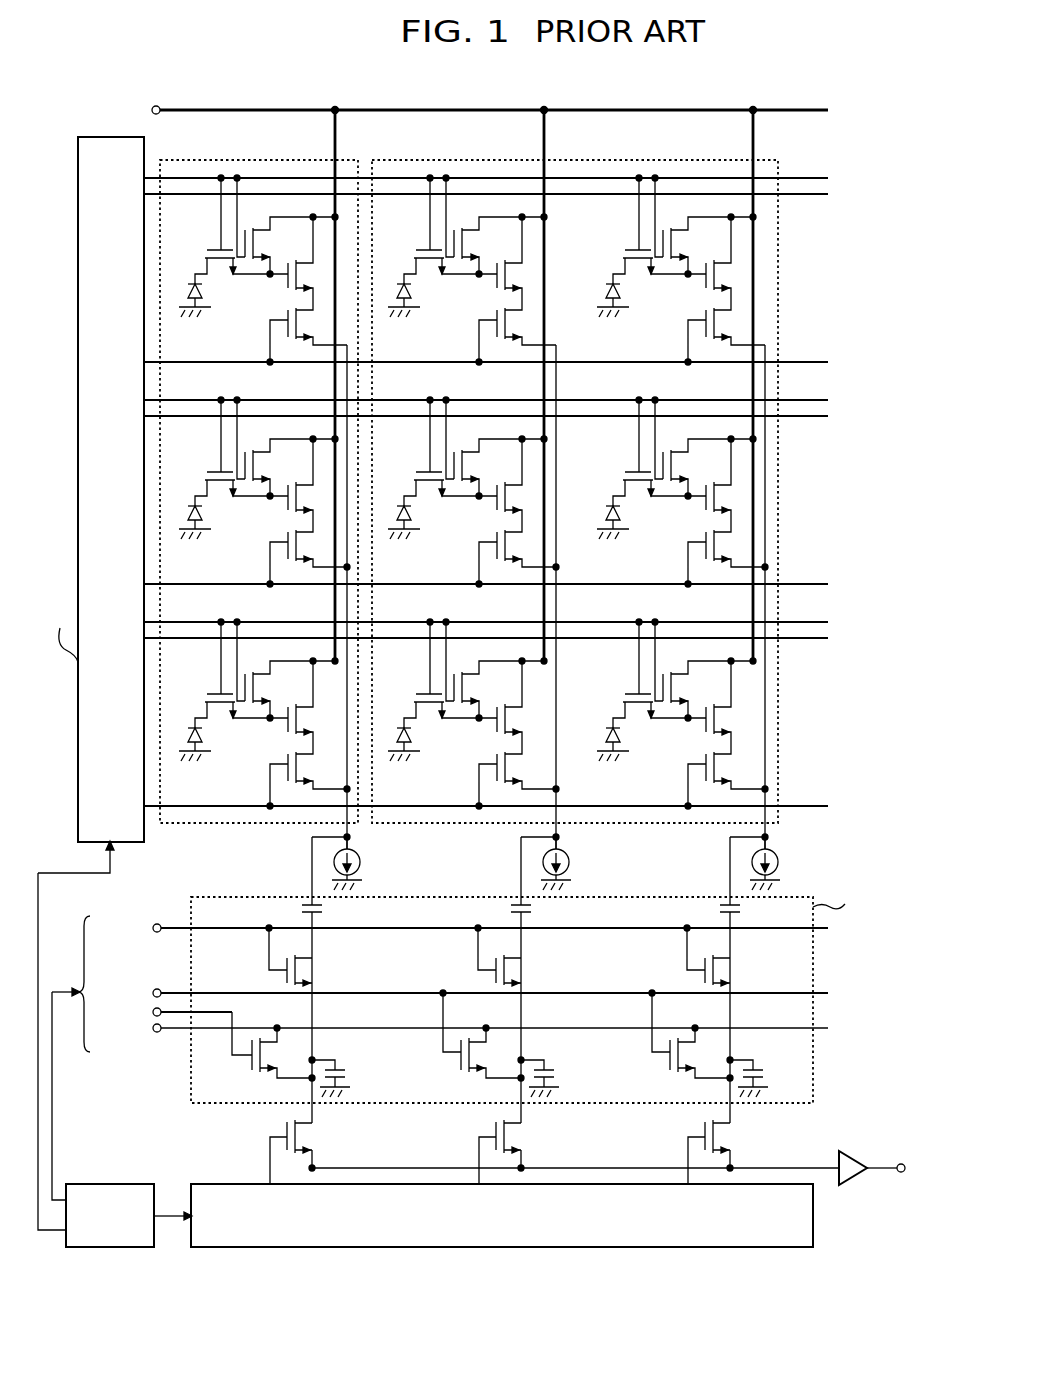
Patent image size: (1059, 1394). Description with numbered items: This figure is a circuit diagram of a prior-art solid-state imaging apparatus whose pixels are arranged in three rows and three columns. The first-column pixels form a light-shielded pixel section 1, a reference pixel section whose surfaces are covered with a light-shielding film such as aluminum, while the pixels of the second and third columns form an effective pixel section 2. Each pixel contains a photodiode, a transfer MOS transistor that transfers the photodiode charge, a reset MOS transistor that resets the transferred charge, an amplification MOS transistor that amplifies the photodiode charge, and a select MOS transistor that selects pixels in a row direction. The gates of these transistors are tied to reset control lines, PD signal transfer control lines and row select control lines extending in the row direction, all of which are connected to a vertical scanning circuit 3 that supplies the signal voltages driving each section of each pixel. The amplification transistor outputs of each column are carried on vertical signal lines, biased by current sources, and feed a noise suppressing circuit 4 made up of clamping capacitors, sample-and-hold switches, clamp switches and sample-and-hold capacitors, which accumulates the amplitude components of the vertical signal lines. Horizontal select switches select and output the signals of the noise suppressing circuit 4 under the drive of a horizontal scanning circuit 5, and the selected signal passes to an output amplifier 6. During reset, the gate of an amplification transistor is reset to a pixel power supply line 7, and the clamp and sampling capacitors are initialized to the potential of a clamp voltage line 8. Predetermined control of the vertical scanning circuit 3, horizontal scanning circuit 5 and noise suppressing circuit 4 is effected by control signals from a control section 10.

The light-shielded pixel section 1 is at (190, 160).
The effective pixel section 2 is at (400, 160).
The vertical scanning circuit 3 is at (97, 137).
The noise suppressing circuit 4 is at (218, 897).
The horizontal scanning circuit 5 is at (283, 1250).
The output amplifier 6 is at (850, 1180).
The pixel power supply line 7 is at (152, 107).
The clamp voltage line 8 is at (479, 1029).
The control section 10 is at (108, 1250).